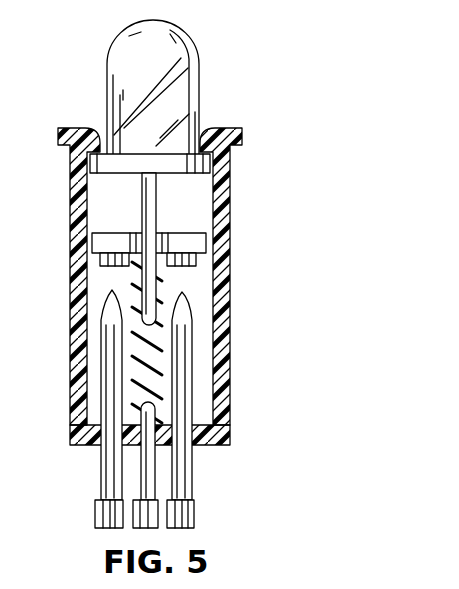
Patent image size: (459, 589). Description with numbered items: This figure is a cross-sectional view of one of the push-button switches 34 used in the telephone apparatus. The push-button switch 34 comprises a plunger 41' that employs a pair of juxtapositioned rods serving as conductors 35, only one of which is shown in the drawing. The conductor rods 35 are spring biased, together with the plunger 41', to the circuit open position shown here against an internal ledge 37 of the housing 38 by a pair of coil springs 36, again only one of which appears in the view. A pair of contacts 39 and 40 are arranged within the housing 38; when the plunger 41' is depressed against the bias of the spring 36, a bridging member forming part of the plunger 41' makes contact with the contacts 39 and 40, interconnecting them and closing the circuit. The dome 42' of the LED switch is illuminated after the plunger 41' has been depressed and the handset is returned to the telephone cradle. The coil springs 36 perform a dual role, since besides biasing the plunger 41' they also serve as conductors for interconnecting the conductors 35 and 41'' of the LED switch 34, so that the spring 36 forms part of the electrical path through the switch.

The push-button switch 34 is at (207, 79).
The conductor rod 35 is at (157, 215).
The coil spring 36 is at (138, 368).
The internal ledge 37 is at (207, 169).
The housing 38 is at (228, 303).
The contact 39 is at (104, 314).
The contact 40 is at (194, 312).
The plunger 41' is at (149, 230).
The conductor 41'' is at (167, 519).
The dome 42' is at (163, 63).